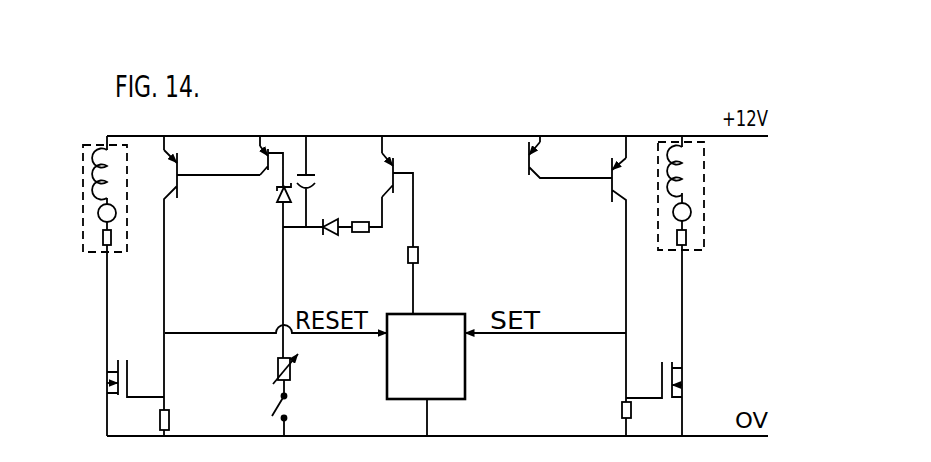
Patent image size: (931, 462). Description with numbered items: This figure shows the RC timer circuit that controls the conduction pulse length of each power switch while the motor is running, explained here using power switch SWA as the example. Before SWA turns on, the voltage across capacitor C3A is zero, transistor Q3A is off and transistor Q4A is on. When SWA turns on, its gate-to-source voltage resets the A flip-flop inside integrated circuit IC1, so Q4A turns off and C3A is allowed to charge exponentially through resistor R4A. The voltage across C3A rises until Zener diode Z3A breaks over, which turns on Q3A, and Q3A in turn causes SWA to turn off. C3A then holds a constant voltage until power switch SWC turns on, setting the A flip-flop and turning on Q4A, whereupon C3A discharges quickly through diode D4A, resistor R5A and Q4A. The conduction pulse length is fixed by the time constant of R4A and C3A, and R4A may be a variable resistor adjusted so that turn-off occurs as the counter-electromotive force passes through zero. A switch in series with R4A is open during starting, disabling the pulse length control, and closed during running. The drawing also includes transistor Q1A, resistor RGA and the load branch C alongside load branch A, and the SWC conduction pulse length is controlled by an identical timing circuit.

The A flip-flop A is at (95, 198).
The transistor Q1A is at (194, 273).
The transistor Q3A is at (244, 161).
The transistor Q4A is at (415, 191).
The capacitor C3A is at (329, 181).
The Zener diode Z3A is at (259, 270).
The diode D4A is at (323, 241).
The resistor R5A is at (376, 230).
The resistor RGA is at (439, 280).
The resistor R4A is at (307, 395).
The power switch SWA is at (108, 378).
The power switch SWC is at (684, 380).
The integrated circuit IC1 is at (443, 375).
The load C (coil, lamp and fuse) C is at (690, 196).